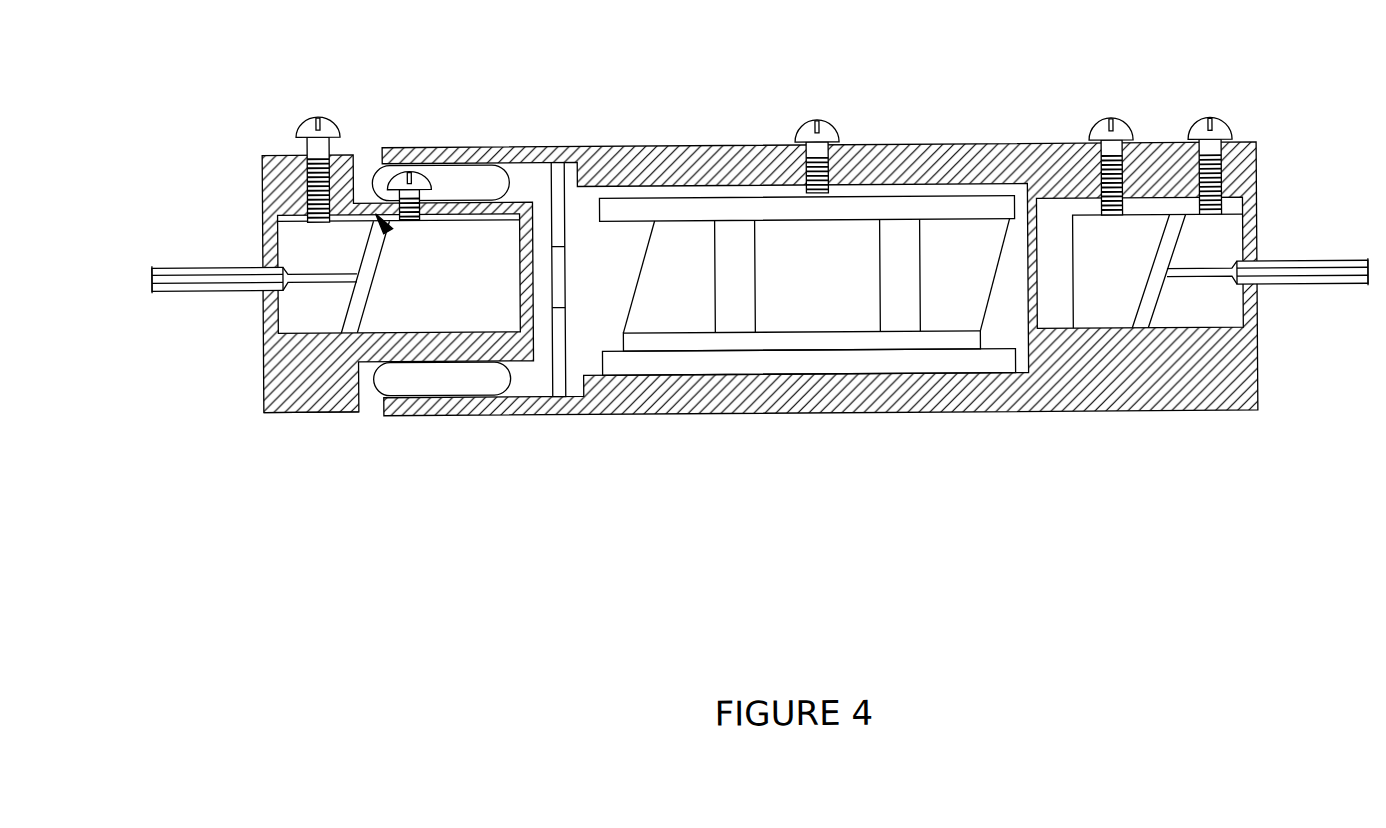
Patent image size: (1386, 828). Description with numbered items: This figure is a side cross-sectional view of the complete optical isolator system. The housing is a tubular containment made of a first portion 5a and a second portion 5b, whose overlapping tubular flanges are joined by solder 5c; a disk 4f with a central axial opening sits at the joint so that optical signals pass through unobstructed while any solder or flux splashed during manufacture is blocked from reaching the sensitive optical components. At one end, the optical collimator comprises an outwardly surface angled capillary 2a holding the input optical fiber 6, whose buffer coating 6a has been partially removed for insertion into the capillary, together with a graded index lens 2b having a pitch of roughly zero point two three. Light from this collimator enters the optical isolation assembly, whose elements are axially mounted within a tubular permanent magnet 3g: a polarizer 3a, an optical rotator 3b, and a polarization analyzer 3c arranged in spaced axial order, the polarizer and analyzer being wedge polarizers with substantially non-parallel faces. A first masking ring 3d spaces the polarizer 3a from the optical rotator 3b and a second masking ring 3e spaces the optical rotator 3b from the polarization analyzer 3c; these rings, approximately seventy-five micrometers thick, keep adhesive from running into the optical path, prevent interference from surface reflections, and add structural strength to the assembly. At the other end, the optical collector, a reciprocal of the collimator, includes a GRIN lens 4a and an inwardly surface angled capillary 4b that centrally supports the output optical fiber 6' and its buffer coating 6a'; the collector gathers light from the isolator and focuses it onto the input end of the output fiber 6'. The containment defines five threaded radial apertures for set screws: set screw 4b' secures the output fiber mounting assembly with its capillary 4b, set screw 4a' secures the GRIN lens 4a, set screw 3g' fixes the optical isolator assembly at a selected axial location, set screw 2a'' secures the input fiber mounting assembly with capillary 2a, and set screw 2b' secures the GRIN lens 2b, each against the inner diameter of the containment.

The outwardly surface angled capillary 2a is at (1172, 350).
The set screw 2a'' is at (1182, 146).
The GRIN lens 2b is at (1146, 352).
The set screw 2b' is at (1084, 147).
The polarizer 3a is at (952, 313).
The optical rotator 3b is at (820, 320).
The polarization analyzer 3c is at (662, 322).
The first masking ring 3d is at (900, 320).
The second masking ring 3e is at (732, 320).
The tubular magnet 3g is at (807, 354).
The set screw 3g' is at (841, 112).
The GRIN lens 4a is at (399, 203).
The set screw 4a' is at (428, 157).
The inwardly surface angled capillary 4b is at (357, 286).
The set screw 4b' is at (325, 137).
The disk 4f is at (578, 145).
The first portion of containment structure 5a is at (890, 150).
The second portion of containment structure 5b is at (335, 409).
The solder 5c is at (455, 175).
The input optical fiber 6 is at (1369, 300).
The output optical fiber 6' is at (135, 306).
The buffer coating 6a is at (1267, 228).
The buffer coating 6a' is at (254, 232).